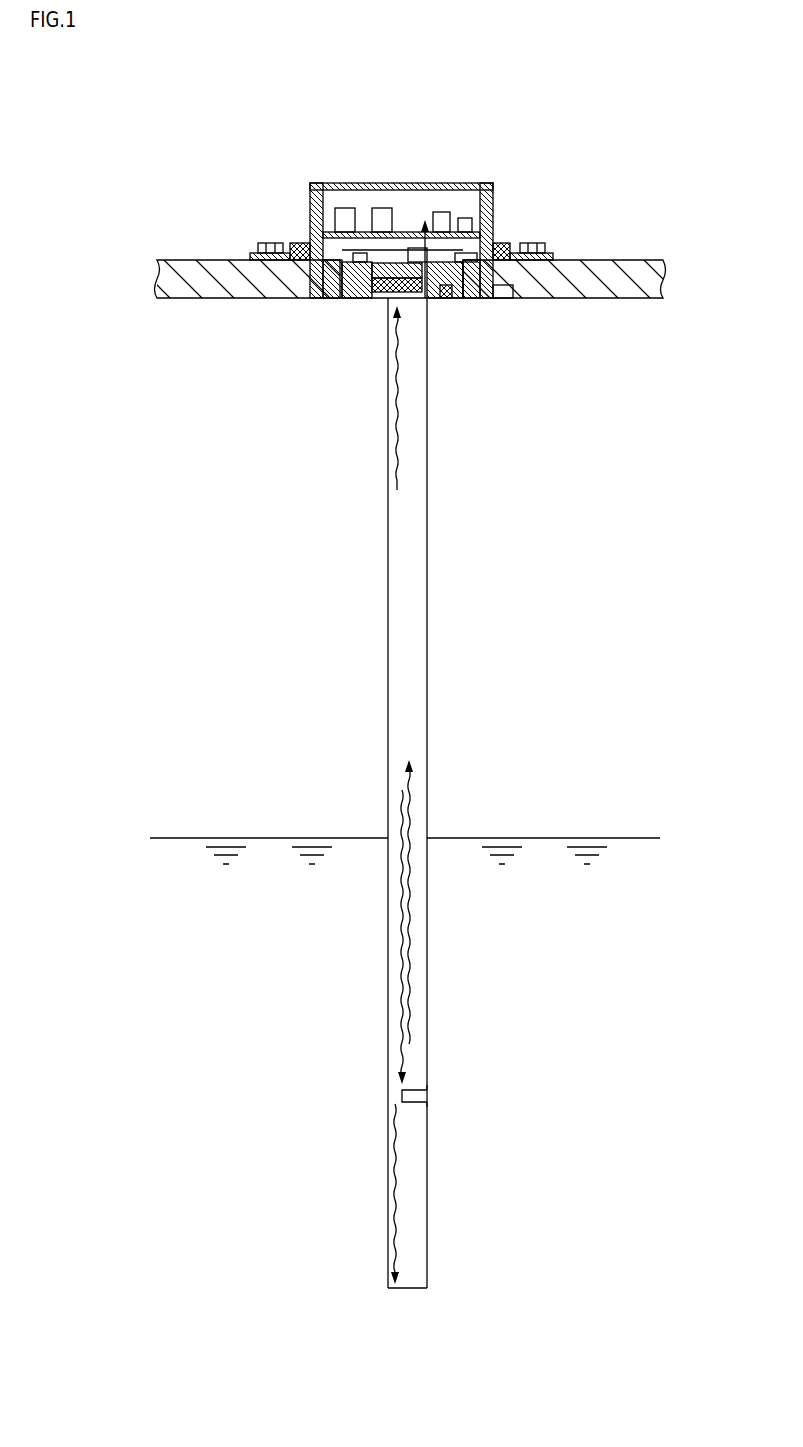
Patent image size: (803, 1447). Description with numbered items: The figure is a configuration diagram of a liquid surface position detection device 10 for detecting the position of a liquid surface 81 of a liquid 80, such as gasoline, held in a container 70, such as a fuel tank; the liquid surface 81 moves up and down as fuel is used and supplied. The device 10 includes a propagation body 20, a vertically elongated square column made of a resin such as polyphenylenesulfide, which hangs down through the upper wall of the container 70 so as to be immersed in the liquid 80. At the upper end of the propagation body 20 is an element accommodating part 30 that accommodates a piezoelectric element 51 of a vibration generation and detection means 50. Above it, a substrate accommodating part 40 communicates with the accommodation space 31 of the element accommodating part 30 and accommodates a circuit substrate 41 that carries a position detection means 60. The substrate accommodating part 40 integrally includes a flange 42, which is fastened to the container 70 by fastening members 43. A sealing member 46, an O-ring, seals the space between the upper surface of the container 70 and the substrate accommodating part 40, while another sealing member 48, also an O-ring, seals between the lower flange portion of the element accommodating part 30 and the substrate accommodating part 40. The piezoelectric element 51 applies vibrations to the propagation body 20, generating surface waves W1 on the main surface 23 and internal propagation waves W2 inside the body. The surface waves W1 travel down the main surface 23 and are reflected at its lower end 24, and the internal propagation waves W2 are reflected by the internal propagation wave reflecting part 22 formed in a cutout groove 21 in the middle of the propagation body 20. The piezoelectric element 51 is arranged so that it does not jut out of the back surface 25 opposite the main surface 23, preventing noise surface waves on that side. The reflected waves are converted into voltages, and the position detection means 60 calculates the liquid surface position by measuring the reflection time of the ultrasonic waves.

The liquid surface position detection device 10 is at (205, 152).
The propagation body 20 is at (425, 821).
The groove 21 is at (438, 1099).
The internal propagation wave reflecting part 22 is at (420, 1094).
The main surface 23 is at (388, 674).
The lower end 24 is at (388, 1289).
The back surface 25 is at (428, 675).
The element accommodating part 30 is at (365, 300).
The accommodation space 31 is at (385, 248).
The substrate accommodating part 40 is at (310, 197).
The circuit substrate 41 is at (400, 237).
The flange 42 is at (247, 258).
The fastening member 43 is at (268, 242).
The sealing member 46 is at (513, 298).
The sealing member 48 is at (447, 298).
The vibration generation and detection means 50 is at (407, 305).
The piezoelectric element 51 is at (383, 301).
The position detection means 60 is at (445, 208).
The container 70 is at (637, 260).
The liquid 80 is at (585, 867).
The liquid surface 81 is at (505, 836).
The surface waves W1 is at (397, 425).
The internal propagation waves W2 is at (404, 807).